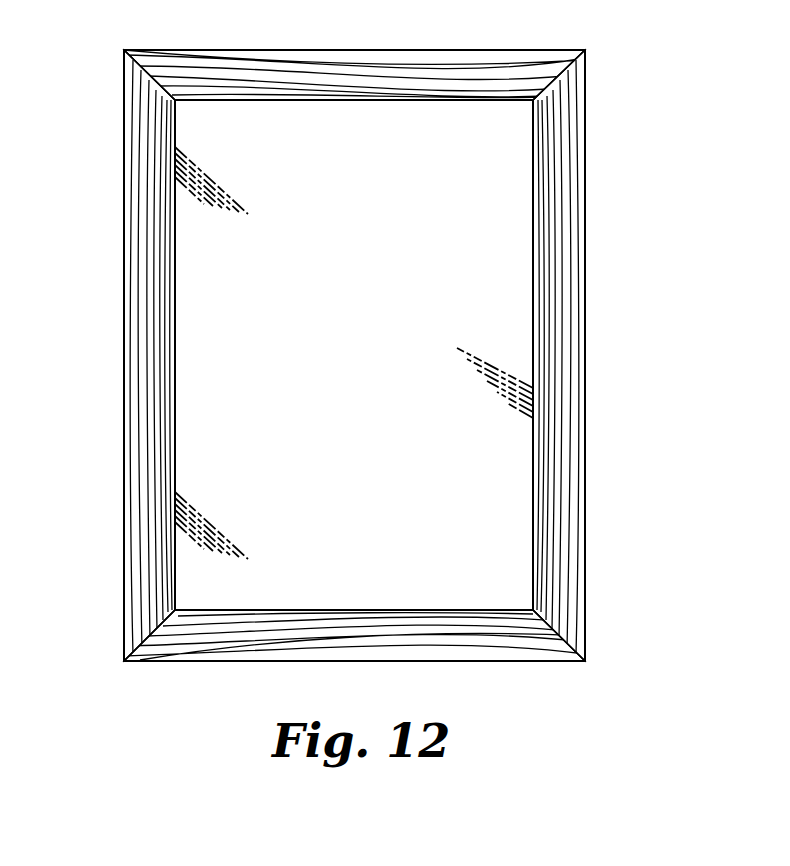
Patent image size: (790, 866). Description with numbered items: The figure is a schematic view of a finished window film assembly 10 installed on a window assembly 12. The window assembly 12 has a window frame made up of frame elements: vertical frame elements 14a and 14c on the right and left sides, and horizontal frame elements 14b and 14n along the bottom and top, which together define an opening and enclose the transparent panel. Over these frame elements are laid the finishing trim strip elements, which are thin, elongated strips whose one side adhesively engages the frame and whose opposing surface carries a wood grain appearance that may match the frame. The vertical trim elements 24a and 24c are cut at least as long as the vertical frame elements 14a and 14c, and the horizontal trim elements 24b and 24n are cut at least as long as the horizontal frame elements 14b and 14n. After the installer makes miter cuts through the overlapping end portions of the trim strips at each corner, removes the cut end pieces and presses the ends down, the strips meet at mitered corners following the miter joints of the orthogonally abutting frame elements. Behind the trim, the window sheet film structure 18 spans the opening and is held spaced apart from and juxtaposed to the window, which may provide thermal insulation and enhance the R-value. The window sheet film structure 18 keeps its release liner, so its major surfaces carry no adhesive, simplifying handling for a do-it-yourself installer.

The window film assembly 10 is at (652, 128).
The window assembly 12 is at (598, 223).
The horizontal window frame element 14n is at (290, 49).
The vertical window frame element 14a is at (585, 300).
The horizontal window frame element 14b is at (293, 662).
The vertical window frame element 14c is at (124, 322).
The horizontal trim strip element 24n is at (360, 88).
The vertical trim strip element 24a is at (548, 358).
The horizontal trim strip element 24b is at (380, 622).
The vertical trim strip element 24c is at (163, 382).
The window sheet film structure 18 is at (361, 337).